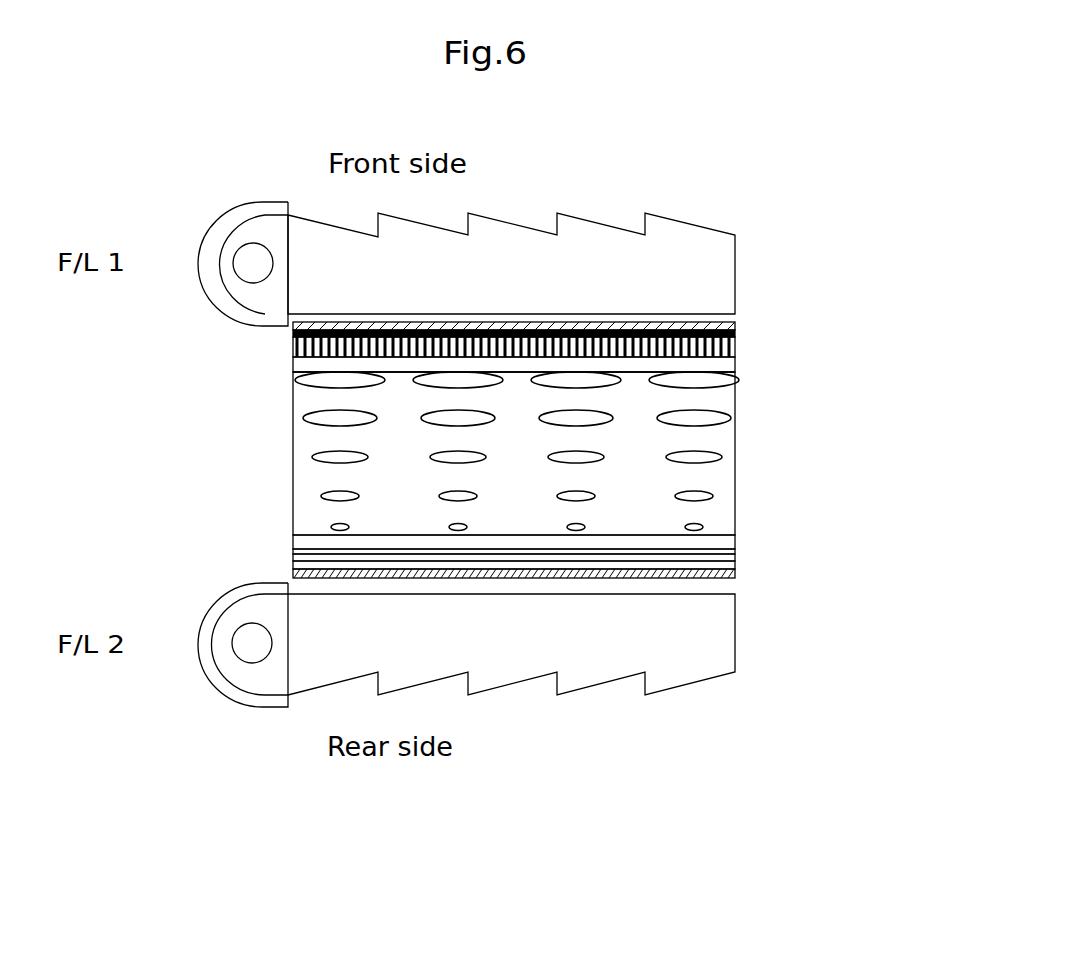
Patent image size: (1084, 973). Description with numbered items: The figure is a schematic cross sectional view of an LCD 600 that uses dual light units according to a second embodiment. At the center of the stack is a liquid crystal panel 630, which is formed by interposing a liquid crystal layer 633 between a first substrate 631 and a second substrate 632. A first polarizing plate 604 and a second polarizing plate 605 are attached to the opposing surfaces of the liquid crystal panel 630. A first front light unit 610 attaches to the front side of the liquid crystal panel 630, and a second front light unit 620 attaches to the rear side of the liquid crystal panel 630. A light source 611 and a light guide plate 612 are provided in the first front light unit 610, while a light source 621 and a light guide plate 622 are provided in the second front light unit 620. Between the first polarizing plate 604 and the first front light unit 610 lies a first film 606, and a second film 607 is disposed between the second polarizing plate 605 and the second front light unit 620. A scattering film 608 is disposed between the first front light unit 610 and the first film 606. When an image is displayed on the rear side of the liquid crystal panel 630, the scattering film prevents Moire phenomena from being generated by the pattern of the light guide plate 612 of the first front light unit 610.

The LCD 600 is at (882, 336).
The first polarizing plate 604 is at (293, 356).
The second polarizing plate 605 is at (735, 562).
The first film 606 is at (735, 333).
The second film 607 is at (735, 578).
The scattering film 608 is at (735, 325).
The first front light unit 610 is at (578, 212).
The light source 611 is at (250, 272).
The light guide plate 612 is at (735, 260).
The second front light unit 620 is at (581, 724).
The light source 621 is at (250, 648).
The light guide plate 622 is at (735, 660).
The liquid crystal panel 630 is at (850, 382).
The first substrate 631 is at (735, 541).
The second substrate 632 is at (735, 377).
The liquid crystal layer 633 is at (730, 472).